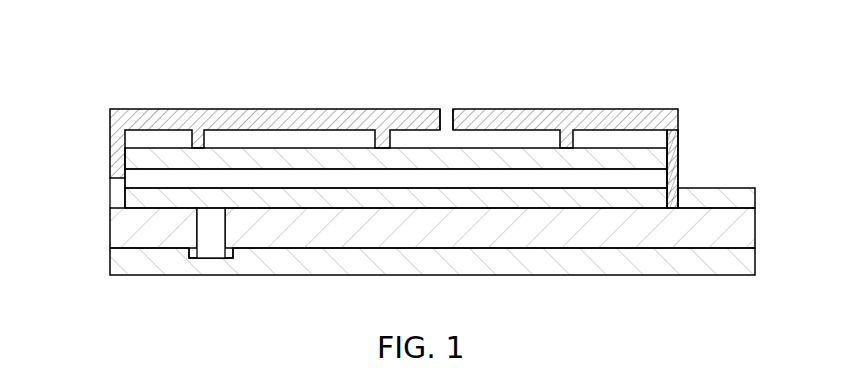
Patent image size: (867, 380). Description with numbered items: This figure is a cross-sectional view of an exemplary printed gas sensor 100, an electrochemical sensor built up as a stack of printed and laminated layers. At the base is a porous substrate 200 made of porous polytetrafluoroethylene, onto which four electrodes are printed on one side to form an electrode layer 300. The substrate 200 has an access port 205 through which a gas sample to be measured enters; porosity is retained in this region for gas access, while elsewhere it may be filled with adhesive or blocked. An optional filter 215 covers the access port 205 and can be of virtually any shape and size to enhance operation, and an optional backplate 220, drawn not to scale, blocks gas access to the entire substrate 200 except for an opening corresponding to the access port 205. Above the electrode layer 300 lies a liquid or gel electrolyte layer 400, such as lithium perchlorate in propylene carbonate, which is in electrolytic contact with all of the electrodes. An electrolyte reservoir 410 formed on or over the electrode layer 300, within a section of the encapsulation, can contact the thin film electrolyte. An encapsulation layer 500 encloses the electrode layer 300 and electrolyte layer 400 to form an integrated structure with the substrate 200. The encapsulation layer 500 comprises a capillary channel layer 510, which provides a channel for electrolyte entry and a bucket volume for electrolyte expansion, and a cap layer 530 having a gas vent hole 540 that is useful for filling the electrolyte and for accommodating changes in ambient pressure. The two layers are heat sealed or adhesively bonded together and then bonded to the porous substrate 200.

The printed gas sensor 100 is at (562, 81).
The porous substrate 200 is at (750, 225).
The access port 205 is at (218, 228).
The filter 215 is at (213, 255).
The backplate 220 is at (750, 262).
The electrode layer 300 is at (750, 195).
The electrolyte layer 400 is at (133, 181).
The electrolyte reservoir 410 is at (263, 140).
The encapsulation layer 500 is at (434, 135).
The capillary channel layer 510 is at (532, 155).
The cap layer 530 is at (627, 117).
The gas vent hole 540 is at (447, 110).